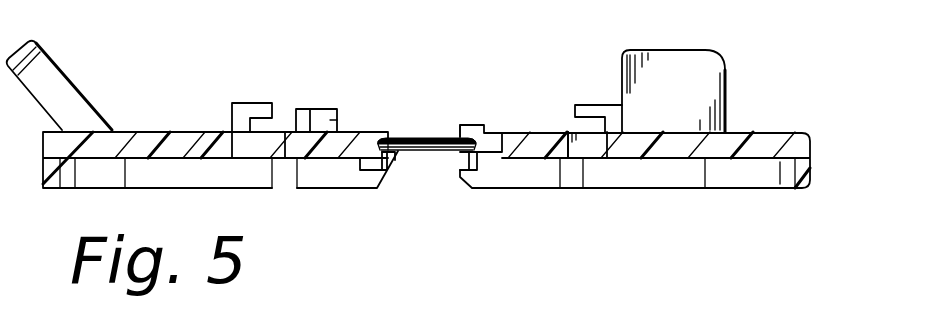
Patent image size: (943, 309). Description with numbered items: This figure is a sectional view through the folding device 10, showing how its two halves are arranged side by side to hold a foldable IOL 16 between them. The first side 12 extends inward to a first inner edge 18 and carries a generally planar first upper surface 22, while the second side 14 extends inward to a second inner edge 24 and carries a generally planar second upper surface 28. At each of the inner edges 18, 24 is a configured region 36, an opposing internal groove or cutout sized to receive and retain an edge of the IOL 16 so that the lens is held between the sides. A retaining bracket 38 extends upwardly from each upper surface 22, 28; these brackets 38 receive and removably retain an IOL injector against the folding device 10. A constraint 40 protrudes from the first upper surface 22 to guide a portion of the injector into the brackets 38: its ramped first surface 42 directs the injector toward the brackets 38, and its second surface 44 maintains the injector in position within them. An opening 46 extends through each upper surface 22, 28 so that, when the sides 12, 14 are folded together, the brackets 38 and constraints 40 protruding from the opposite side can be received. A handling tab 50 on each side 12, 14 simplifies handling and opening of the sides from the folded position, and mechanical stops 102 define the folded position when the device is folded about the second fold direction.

The folding device 10 is at (158, 82).
The first side 12 is at (44, 170).
The second side 14 is at (808, 189).
The foldable IOL 16 is at (445, 137).
The first inner edge 18 is at (407, 154).
The first upper surface 22 is at (182, 130).
The second inner edge 24 is at (442, 155).
The second upper surface 28 is at (565, 128).
The configured region 36 is at (394, 133).
The retaining bracket 38 is at (243, 103).
The constraint 40 is at (318, 110).
The first surface 42 is at (333, 120).
The second surface 44 is at (297, 132).
The opening 46 is at (254, 150).
The handling tab 50 is at (76, 82).
The mechanical stop 102 is at (405, 168).